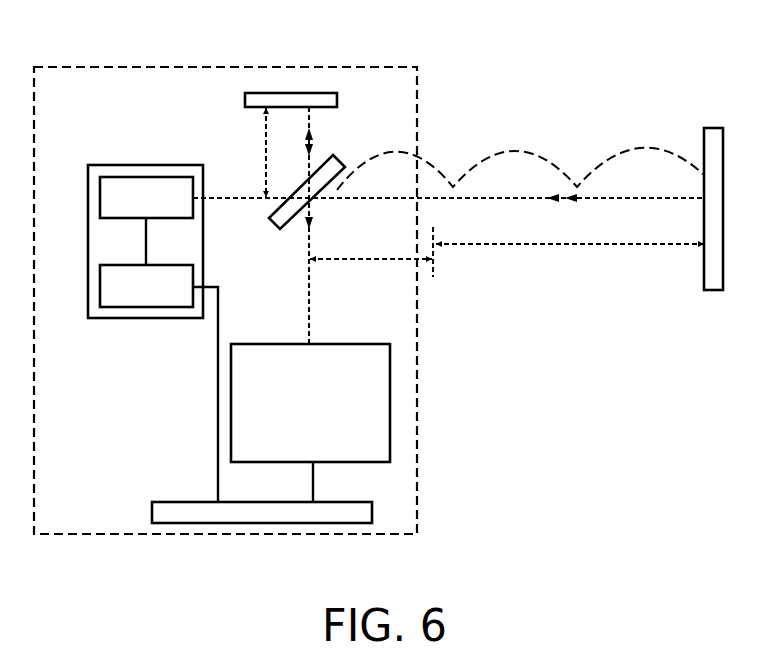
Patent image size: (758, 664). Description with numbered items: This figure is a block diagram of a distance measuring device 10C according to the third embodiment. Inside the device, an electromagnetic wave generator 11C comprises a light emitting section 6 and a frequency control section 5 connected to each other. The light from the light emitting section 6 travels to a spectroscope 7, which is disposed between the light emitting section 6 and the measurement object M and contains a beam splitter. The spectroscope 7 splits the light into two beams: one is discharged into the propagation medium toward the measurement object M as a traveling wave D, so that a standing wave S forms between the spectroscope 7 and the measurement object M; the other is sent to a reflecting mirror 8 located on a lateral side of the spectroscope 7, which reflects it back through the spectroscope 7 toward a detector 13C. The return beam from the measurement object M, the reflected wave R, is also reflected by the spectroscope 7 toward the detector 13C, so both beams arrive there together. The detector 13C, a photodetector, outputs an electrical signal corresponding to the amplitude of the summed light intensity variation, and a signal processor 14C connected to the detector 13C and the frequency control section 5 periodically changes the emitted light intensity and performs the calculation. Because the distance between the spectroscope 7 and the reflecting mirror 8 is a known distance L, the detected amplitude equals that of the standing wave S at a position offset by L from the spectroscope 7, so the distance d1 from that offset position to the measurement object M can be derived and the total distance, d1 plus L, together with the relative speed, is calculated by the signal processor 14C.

The distance measuring device 10C is at (108, 66).
The electromagnetic wave generator 11C is at (109, 165).
The light emitting section 6 is at (100, 198).
The frequency control section 5 is at (100, 287).
The reflecting mirror 8 is at (245, 100).
The spectroscope 7 is at (343, 163).
The detector 13C is at (390, 417).
The signal processor 14C is at (372, 511).
The standing wave S is at (541, 158).
The reflected wave R is at (492, 199).
The traveling wave D is at (657, 199).
The measurement object M is at (713, 290).
The distance between spectroscope and reflecting mirror L is at (338, 192).
The distance between measurement object and offset position d1 is at (570, 261).